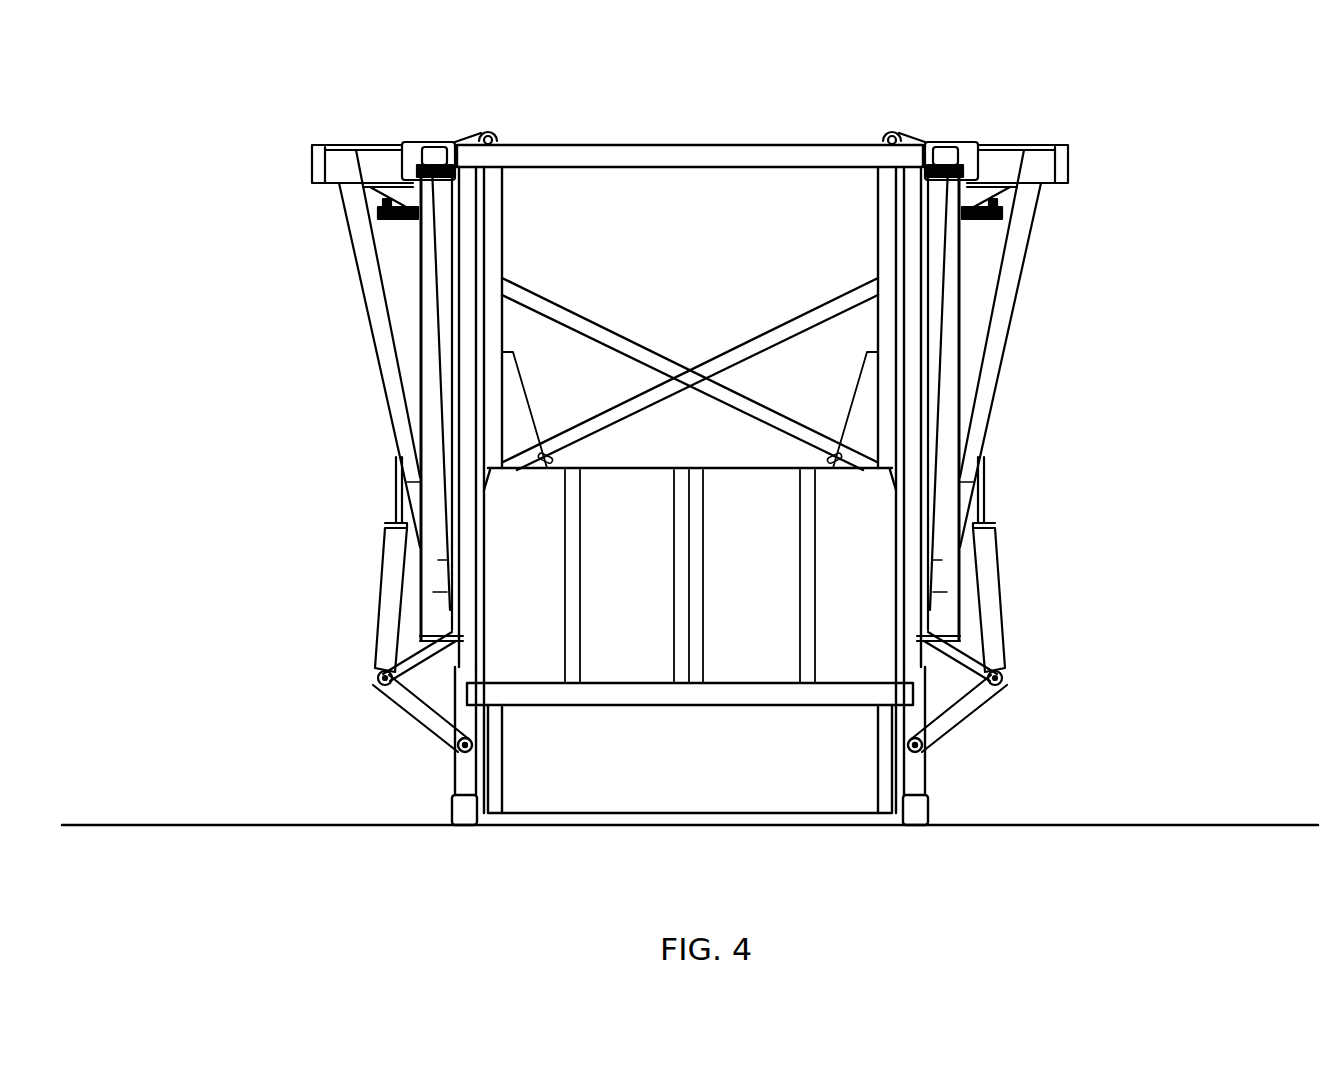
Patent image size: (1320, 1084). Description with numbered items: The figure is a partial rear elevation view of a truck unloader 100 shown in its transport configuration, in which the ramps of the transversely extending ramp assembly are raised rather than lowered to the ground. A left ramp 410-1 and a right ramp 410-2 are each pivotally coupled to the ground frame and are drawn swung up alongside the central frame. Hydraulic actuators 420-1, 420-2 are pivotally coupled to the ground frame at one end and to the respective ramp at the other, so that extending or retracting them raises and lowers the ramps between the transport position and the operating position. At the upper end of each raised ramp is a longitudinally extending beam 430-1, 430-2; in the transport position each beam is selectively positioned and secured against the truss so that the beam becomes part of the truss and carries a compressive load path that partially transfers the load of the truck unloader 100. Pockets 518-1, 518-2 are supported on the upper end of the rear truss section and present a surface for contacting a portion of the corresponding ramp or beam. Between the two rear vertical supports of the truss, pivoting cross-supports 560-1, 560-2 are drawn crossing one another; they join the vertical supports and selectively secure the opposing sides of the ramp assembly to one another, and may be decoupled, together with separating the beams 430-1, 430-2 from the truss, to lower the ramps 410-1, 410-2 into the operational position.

The truck unloader 100 is at (1179, 125).
The left ramp 410-1 is at (338, 388).
The right ramp 410-2 is at (1042, 390).
The actuator 420-1 is at (380, 585).
The actuator 420-2 is at (1000, 585).
The beam 430-1 is at (437, 140).
The beam 430-2 is at (943, 140).
The pocket 518-1 is at (443, 140).
The pocket 518-2 is at (937, 140).
The cross-support 560-1 is at (518, 285).
The cross-support 560-2 is at (862, 285).